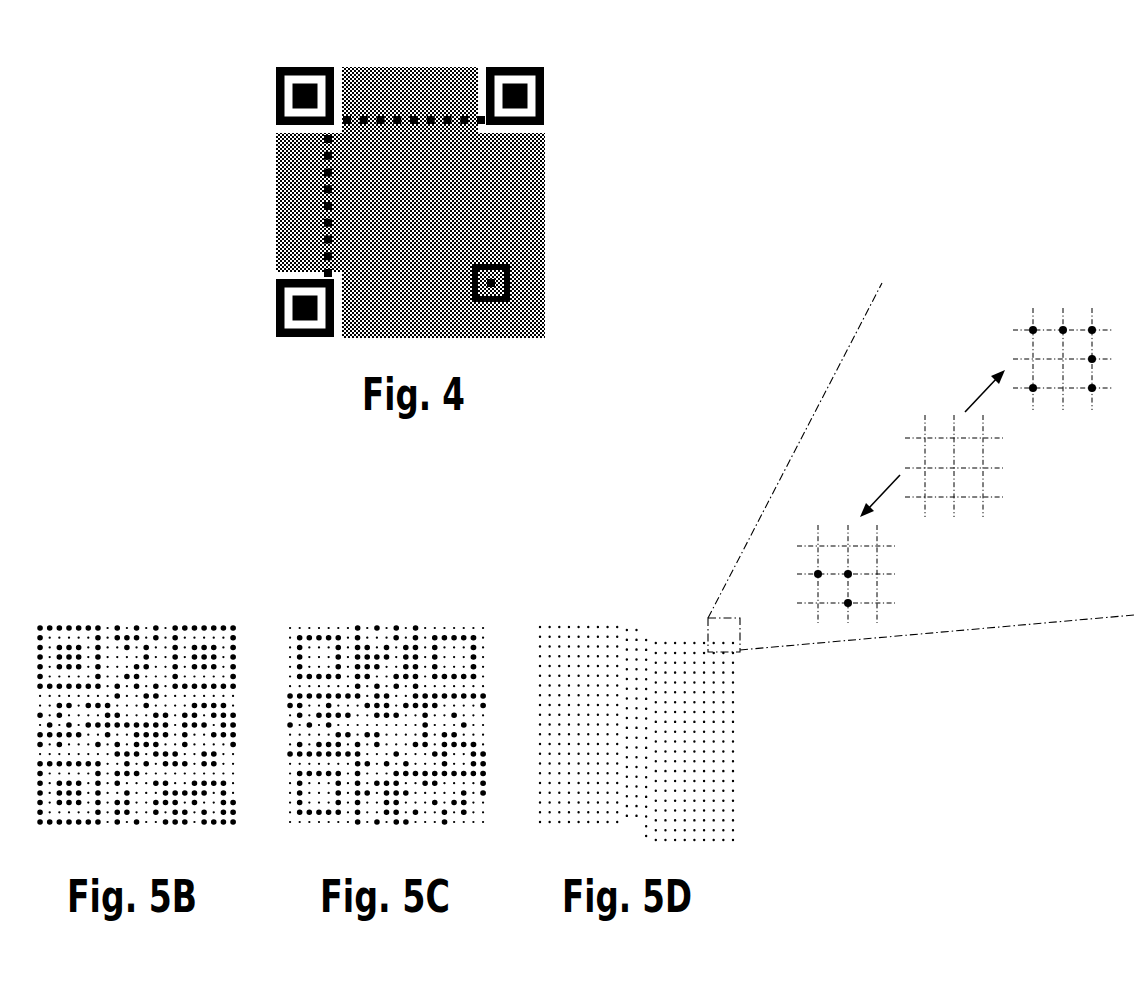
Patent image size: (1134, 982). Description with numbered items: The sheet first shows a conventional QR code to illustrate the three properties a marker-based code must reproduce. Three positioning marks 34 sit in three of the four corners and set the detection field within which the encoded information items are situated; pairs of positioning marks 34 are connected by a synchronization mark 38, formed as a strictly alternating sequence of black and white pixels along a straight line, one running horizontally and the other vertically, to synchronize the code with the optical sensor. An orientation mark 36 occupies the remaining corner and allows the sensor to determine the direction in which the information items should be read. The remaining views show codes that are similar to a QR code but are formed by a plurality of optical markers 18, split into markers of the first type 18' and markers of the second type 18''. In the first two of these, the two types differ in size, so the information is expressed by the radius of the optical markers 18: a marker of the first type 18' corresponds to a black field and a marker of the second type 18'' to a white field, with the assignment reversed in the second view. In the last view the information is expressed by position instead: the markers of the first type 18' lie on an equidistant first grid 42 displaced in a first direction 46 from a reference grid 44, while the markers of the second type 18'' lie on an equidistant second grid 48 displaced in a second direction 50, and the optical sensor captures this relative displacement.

In FIG. 4, the positioning mark 34 is at (276, 97).
In FIG. 4, the orientation mark 36 is at (496, 283).
In FIG. 4, the synchronization mark 38 is at (385, 116).
In FIG. 5B, the optical marker 18 is at (123, 681).
In FIG. 5C, the optical marker 18 is at (373, 681).
In FIG. 5D, the optical marker 18 is at (804, 542).
In FIG. 5B, the marker of the first type 18' is at (123, 681).
In FIG. 5C, the marker of the first type 18' is at (373, 681).
In FIG. 5D, the marker of the first type 18' is at (804, 434).
In FIG. 5B, the marker of the second type 18'' is at (136, 681).
In FIG. 5C, the marker of the second type 18'' is at (386, 681).
In FIG. 5D, the marker of the second type 18'' is at (756, 690).
In FIG. 5D, the first grid 42 is at (806, 545).
In FIG. 5D, the reference grid 44 is at (985, 485).
In FIG. 5D, the first direction 46 is at (880, 478).
In FIG. 5D, the second grid 48 is at (1102, 328).
In FIG. 5D, the second direction 50 is at (985, 388).